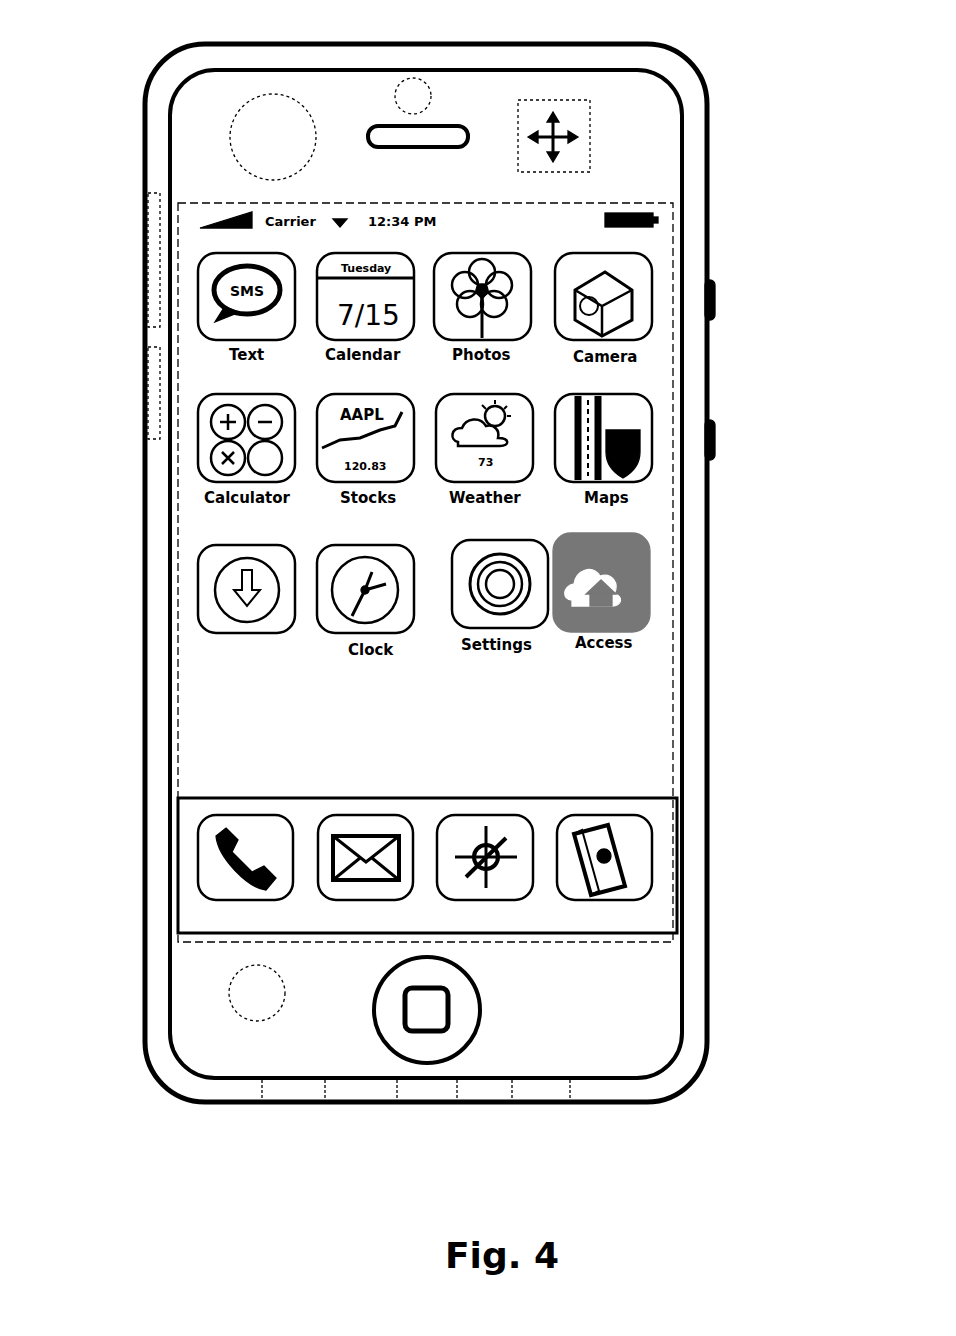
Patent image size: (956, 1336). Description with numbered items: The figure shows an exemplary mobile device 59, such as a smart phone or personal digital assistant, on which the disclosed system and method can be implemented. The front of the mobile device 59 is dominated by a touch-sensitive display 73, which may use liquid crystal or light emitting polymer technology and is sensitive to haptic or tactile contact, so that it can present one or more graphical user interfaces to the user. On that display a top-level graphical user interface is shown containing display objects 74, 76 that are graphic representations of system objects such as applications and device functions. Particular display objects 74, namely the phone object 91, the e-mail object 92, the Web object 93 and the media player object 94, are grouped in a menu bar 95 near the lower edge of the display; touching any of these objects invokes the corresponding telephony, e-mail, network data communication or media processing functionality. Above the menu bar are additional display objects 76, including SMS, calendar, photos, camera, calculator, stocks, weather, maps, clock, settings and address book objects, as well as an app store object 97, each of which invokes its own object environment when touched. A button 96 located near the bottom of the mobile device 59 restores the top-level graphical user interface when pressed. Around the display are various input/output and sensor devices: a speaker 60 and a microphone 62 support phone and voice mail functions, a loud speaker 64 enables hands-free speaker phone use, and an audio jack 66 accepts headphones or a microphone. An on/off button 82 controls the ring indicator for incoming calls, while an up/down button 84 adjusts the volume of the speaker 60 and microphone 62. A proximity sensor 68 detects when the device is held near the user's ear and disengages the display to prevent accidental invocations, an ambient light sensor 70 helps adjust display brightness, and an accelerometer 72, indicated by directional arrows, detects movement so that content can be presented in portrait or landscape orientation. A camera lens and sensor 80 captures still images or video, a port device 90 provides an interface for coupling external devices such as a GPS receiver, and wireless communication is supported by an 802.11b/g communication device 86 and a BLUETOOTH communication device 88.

The mobile device 59 is at (507, 44).
The speaker 60 is at (420, 147).
The microphone 62 is at (303, 1105).
The loud speaker 64 is at (543, 1105).
The audio jack 66 is at (250, 62).
The proximity sensor 68 is at (240, 165).
The ambient light sensor 70 is at (265, 1020).
The accelerometer 72 is at (592, 144).
The touch-sensitive display 73 is at (612, 203).
The display objects 74 is at (677, 803).
The display objects 76 is at (616, 683).
The camera lens and sensor 80 is at (432, 96).
The on/off button 82 is at (718, 300).
The up/down button 84 is at (718, 438).
The 802.11b/g communication device 86 is at (148, 240).
The BLUETOOTH communication device 88 is at (148, 392).
The port device 90 is at (430, 1105).
The phone object 91 is at (250, 812).
The e-mail object 92 is at (366, 812).
The Web object 93 is at (486, 812).
The media player object 94 is at (600, 812).
The menu bar 95 is at (563, 933).
The button 96 is at (480, 1010).
The app store object 97 is at (246, 545).